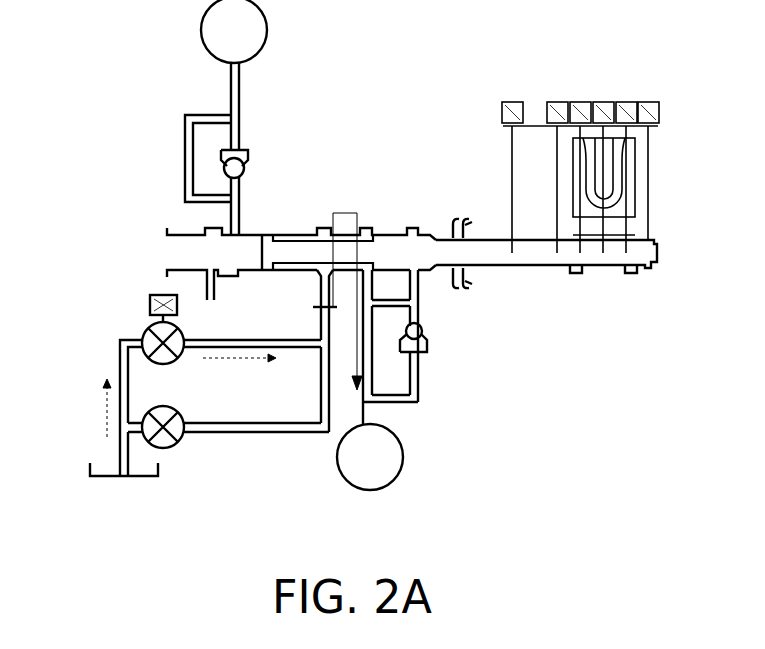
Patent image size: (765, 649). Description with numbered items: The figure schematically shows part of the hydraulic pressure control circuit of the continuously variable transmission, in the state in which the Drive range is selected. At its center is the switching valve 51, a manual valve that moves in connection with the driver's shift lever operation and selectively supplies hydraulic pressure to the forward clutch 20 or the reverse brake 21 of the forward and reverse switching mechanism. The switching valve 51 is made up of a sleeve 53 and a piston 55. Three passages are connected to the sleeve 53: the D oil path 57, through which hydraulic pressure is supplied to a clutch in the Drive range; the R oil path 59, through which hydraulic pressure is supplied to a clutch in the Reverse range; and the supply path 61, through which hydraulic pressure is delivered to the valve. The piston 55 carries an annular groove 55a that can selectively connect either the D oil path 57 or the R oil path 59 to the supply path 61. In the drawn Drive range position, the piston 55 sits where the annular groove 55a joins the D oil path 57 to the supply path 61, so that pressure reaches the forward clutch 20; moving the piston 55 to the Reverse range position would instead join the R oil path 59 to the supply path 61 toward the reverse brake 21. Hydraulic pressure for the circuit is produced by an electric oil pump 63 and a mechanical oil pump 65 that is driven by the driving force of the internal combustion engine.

The forward clutch 20 is at (370, 457).
The reverse brake 21 is at (234, 31).
The switching valve 51 is at (336, 181).
The sleeve 53 is at (193, 238).
The piston 55 is at (530, 256).
The annular groove 55a is at (297, 231).
The D oil path 57 is at (372, 413).
The R oil path 59 is at (230, 97).
The supply path 61 is at (316, 292).
The electric oil pump 63 is at (147, 330).
The mechanical oil pump 65 is at (174, 452).